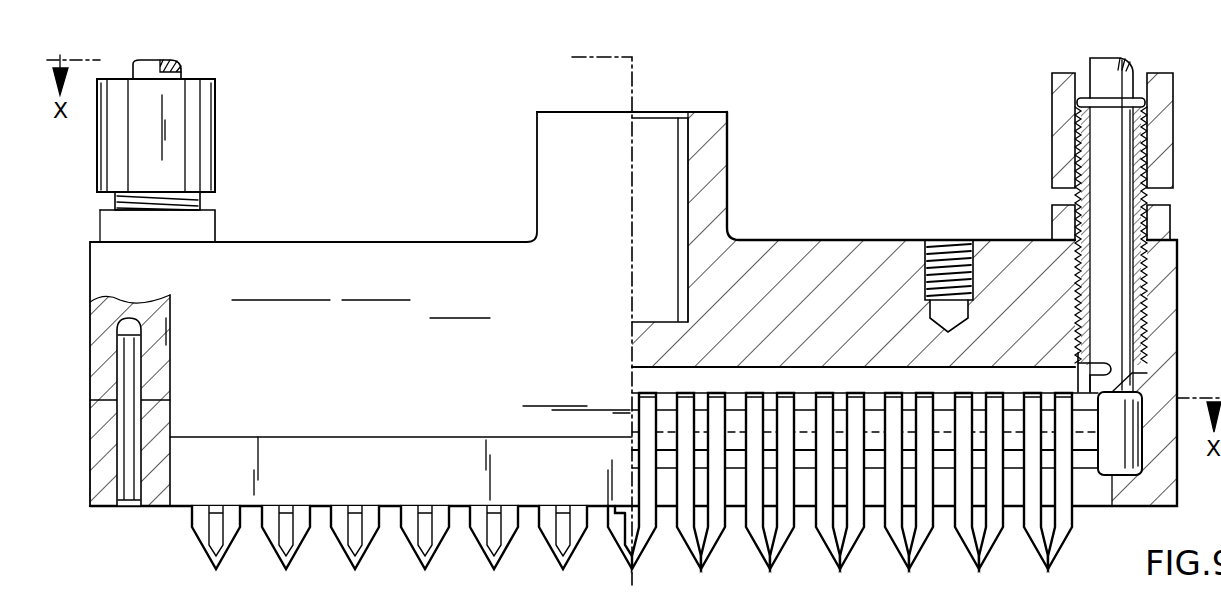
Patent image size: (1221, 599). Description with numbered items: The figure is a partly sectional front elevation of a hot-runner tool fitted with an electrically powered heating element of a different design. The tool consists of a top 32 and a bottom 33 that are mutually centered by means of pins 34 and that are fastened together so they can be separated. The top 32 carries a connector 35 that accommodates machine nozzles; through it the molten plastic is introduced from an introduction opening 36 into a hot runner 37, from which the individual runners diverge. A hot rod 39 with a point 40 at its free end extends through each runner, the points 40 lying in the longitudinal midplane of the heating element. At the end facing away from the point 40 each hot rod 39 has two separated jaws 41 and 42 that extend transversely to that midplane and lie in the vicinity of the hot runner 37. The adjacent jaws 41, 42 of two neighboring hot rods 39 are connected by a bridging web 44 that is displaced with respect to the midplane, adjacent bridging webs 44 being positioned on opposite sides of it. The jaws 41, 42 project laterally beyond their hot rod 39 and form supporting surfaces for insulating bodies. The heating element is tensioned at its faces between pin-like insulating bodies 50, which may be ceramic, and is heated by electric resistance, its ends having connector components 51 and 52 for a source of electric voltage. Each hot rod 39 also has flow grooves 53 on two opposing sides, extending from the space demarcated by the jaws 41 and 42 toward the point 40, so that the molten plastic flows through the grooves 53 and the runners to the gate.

The top 32 is at (770, 252).
The bottom 33 is at (155, 488).
The pins 34 is at (128, 450).
The connector 35 is at (713, 148).
The introduction opening 36 is at (635, 357).
The hot runner 37 is at (808, 378).
The hot rod 39 is at (200, 528).
The point 40 is at (768, 566).
The jaw 41 is at (1058, 368).
The jaw 42 is at (995, 400).
The bridging web 44 is at (877, 437).
The pin-like insulating body 50 is at (1140, 465).
The connector component 51 is at (1112, 150).
The connector component 52 is at (180, 72).
The flow groove 53 is at (1050, 538).